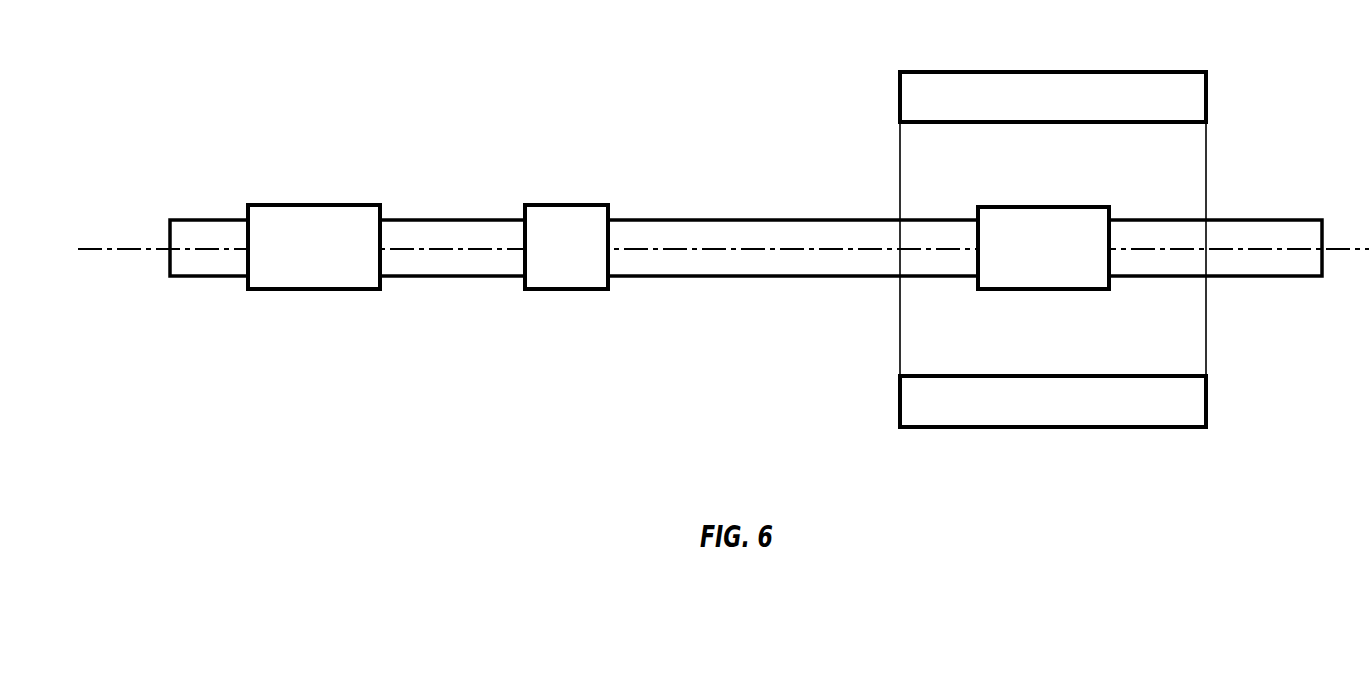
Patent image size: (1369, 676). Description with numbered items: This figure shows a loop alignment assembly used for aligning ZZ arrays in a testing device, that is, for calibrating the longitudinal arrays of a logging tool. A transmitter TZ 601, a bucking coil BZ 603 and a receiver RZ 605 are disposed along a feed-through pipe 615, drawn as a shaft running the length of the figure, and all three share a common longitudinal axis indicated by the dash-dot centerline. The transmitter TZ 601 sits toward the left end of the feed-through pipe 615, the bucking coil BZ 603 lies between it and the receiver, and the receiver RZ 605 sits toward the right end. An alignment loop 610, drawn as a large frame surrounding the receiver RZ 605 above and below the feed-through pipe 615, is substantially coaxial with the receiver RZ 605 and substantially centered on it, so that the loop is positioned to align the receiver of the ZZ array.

The transmitter TZ 601 is at (318, 290).
The bucking coil BZ 603 is at (572, 290).
The receiver RZ 605 is at (1067, 290).
The alignment loop 610 is at (947, 84).
The feed-through pipe 615 is at (1264, 266).